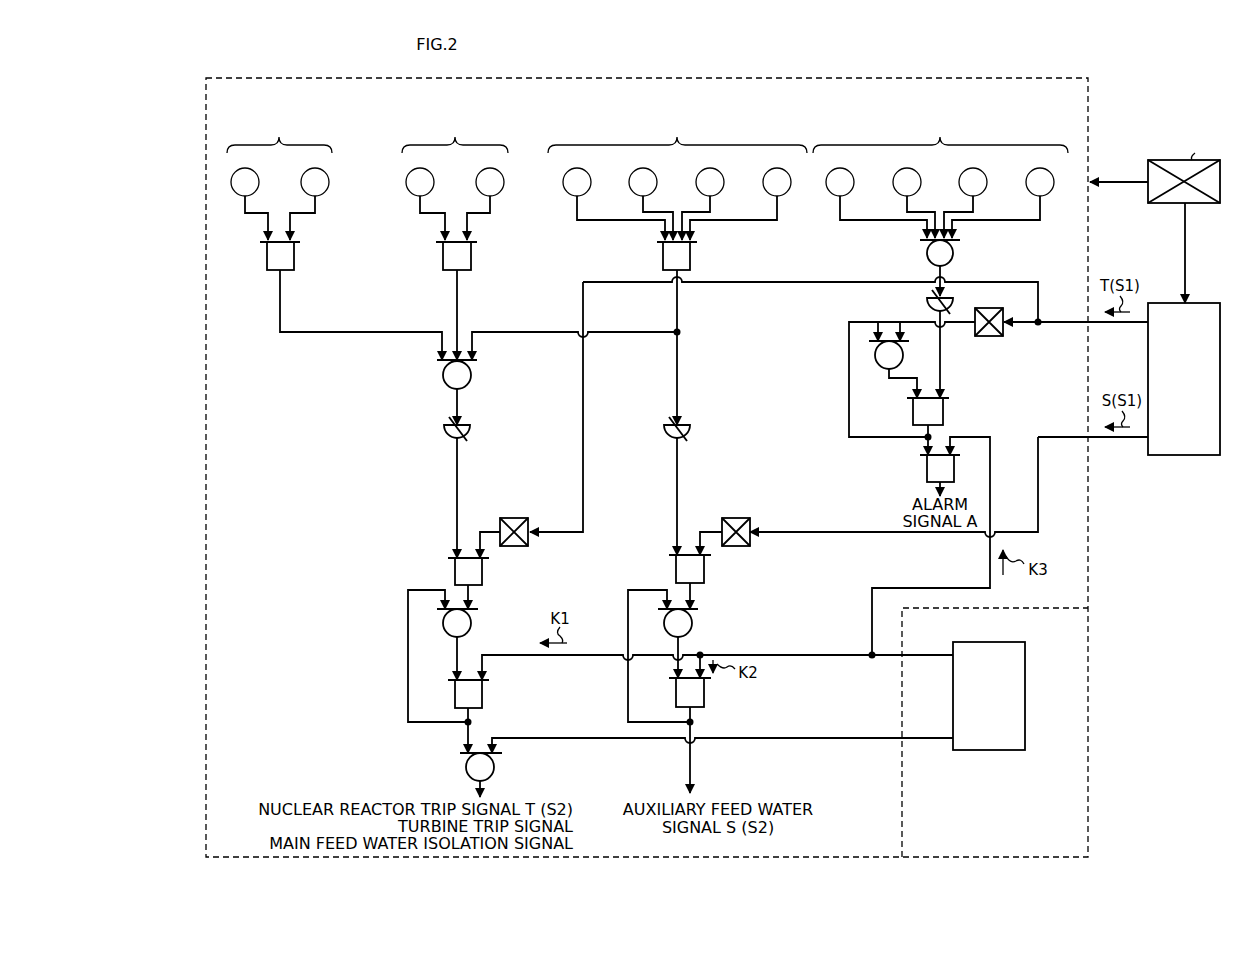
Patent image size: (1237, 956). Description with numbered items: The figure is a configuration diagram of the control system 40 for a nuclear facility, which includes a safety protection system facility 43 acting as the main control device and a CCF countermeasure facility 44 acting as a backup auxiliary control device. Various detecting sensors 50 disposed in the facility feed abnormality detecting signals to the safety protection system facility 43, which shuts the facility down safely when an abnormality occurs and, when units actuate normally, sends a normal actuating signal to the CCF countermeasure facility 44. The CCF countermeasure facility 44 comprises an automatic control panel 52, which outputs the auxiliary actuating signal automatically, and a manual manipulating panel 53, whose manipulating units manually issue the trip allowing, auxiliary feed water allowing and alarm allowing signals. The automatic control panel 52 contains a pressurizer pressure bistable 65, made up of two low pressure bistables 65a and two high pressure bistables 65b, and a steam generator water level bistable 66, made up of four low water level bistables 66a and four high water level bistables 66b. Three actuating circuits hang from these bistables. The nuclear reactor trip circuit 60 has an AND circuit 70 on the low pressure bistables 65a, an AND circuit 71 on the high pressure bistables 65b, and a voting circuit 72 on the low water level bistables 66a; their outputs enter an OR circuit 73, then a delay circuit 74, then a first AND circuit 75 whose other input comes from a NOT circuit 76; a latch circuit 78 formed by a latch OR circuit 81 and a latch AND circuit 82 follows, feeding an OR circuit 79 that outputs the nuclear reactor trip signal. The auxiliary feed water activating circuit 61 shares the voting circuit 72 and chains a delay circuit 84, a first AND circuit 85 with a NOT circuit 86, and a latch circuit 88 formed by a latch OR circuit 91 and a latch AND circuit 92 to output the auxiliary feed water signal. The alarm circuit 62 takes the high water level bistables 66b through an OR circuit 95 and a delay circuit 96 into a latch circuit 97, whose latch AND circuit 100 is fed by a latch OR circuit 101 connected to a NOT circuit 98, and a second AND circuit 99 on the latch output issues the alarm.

The control system 40 is at (957, 70).
The safety protection system facility 43 is at (1200, 455).
The CCF countermeasure facility 44 is at (1088, 675).
The detecting sensor 50 is at (1200, 203).
The automatic control panel 52 is at (905, 810).
The manual manipulating panel 53 is at (988, 750).
The nuclear reactor trip circuit 60 is at (372, 515).
The auxiliary feed water activating circuit 61 is at (740, 408).
The alarm circuit 62 is at (1028, 270).
The pressurizer pressure bistable 65 is at (215, 135).
The low pressure bistable 65a is at (257, 191).
The high pressure bistable 65b is at (432, 191).
The steam generator water level bistable 66 is at (585, 132).
The low water level bistable 66a is at (589, 191).
The high water level bistable 66b is at (852, 191).
The AND circuit 70 is at (294, 255).
The AND circuit 71 is at (471, 255).
The voting circuit 72 is at (690, 255).
The OR circuit 73 is at (471, 378).
The delay circuit 74 is at (471, 431).
The first AND circuit 75 is at (482, 571).
The NOT circuit 76 is at (516, 517).
The latch circuit 78 is at (395, 635).
The OR circuit 79 is at (494, 767).
The latch OR circuit 81 is at (471, 626).
The latch AND circuit 82 is at (482, 694).
The delay circuit 84 is at (691, 431).
The first AND circuit 85 is at (704, 572).
The NOT circuit 86 is at (736, 516).
The latch circuit 88 is at (742, 625).
The latch OR circuit 91 is at (692, 626).
The latch AND circuit 92 is at (704, 694).
The OR circuit 95 is at (953, 257).
The delay circuit 96 is at (955, 300).
The latch circuit 97 is at (835, 348).
The NOT circuit 98 is at (989, 337).
The second AND circuit 99 is at (927, 470).
The latch AND circuit 100 is at (943, 413).
The latch OR circuit 101 is at (880, 368).